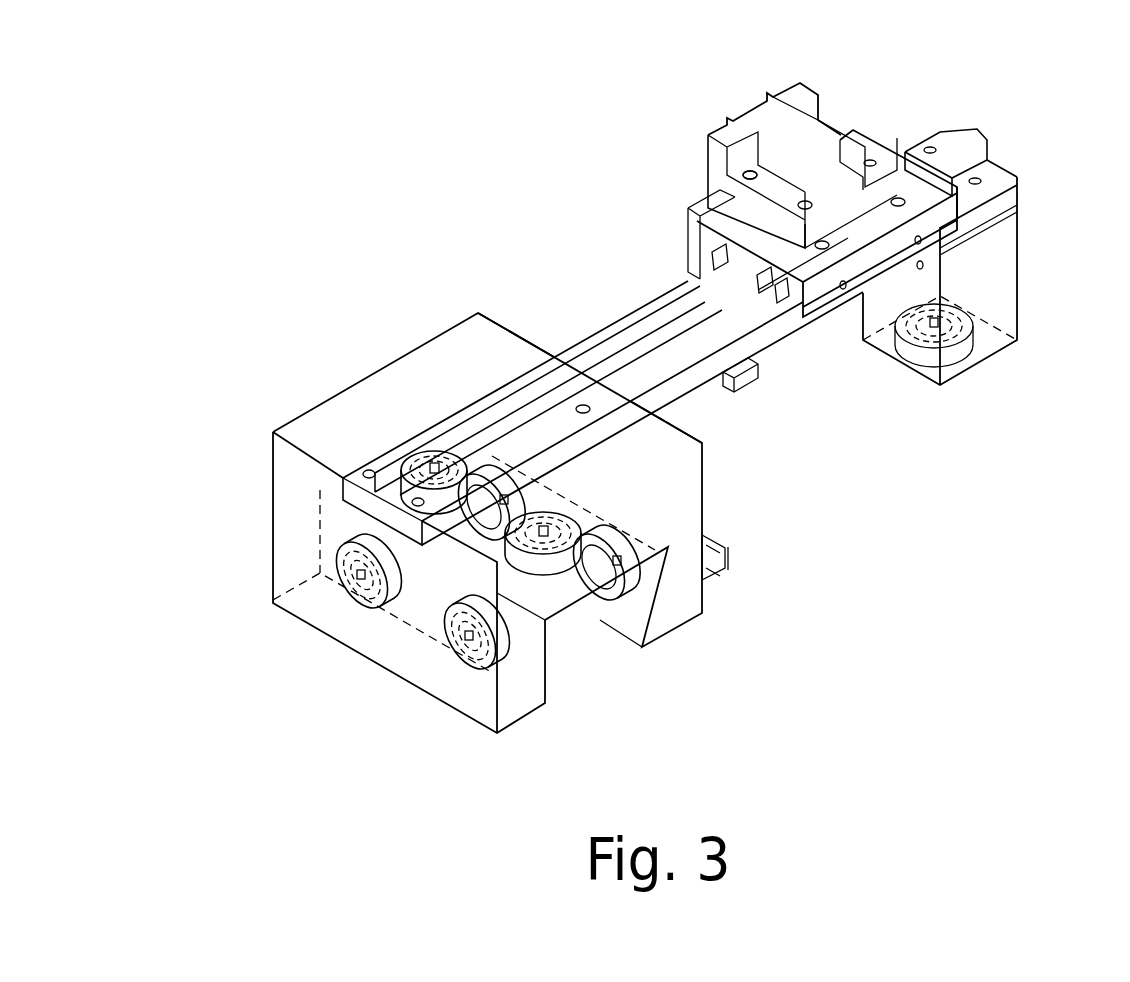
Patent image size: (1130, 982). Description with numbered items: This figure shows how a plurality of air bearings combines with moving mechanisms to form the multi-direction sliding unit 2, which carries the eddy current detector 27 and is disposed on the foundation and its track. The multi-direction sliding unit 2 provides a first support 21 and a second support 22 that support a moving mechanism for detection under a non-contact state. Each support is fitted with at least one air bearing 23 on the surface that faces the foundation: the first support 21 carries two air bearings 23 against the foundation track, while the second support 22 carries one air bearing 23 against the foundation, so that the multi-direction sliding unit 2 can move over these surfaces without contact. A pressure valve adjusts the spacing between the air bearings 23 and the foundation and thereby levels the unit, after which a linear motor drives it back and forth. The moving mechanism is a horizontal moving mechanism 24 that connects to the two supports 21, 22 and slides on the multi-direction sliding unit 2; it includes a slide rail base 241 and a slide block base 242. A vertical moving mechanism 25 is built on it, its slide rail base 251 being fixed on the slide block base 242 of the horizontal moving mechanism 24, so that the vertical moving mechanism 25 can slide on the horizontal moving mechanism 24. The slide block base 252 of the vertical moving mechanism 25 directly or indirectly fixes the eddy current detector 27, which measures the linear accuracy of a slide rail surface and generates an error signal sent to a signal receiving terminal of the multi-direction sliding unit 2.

The multi-direction sliding unit 2 is at (857, 474).
The first support 21 is at (283, 515).
The second support 22 is at (1002, 296).
The air bearing 23 is at (420, 513).
The horizontal moving mechanism 24 is at (822, 313).
The slide rail base 241 is at (975, 135).
The slide block base 242 is at (865, 140).
The vertical moving mechanism 25 is at (712, 170).
The slide rail base 251 is at (767, 103).
The slide block base 252 is at (695, 243).
The eddy current detector 27 is at (745, 372).